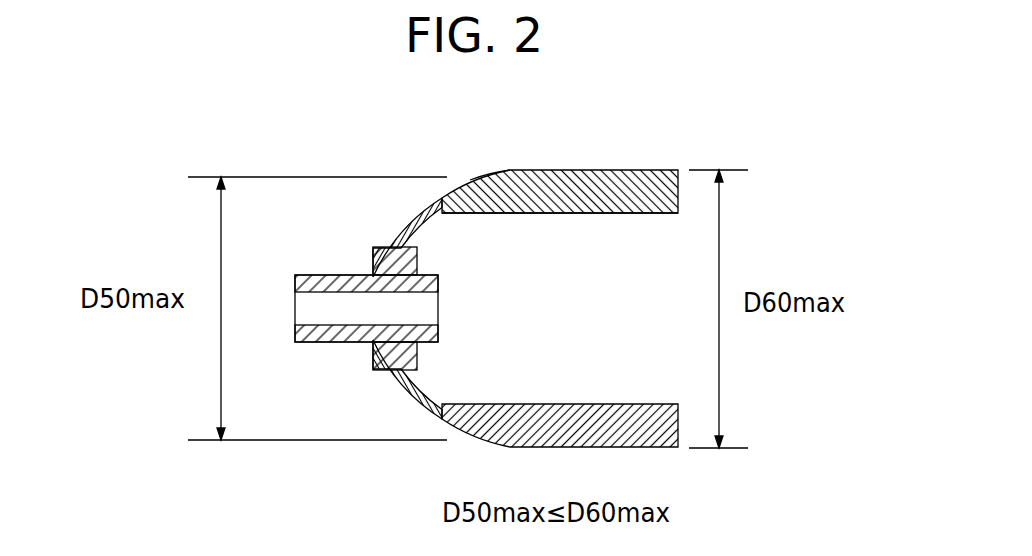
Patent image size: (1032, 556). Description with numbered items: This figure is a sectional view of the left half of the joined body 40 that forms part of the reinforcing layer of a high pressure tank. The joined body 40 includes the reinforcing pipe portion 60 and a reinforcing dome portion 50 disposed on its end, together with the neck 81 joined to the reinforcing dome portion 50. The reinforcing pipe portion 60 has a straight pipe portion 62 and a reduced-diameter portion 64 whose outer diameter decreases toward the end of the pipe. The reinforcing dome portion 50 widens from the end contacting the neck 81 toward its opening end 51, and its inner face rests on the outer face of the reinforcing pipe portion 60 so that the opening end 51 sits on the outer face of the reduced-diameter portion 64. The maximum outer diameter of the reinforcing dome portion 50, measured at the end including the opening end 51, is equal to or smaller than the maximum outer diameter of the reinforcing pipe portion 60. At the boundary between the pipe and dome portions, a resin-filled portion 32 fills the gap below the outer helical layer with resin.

The joined body 40 is at (793, 116).
The resin-filled portion 32 is at (489, 176).
The reinforcing dome portion 50 is at (390, 231).
The opening end 51 is at (513, 214).
The reinforcing pipe portion 60 is at (650, 275).
The straight pipe portion 62 is at (642, 214).
The reduced-diameter portion 64 is at (460, 215).
The neck 81 is at (323, 343).